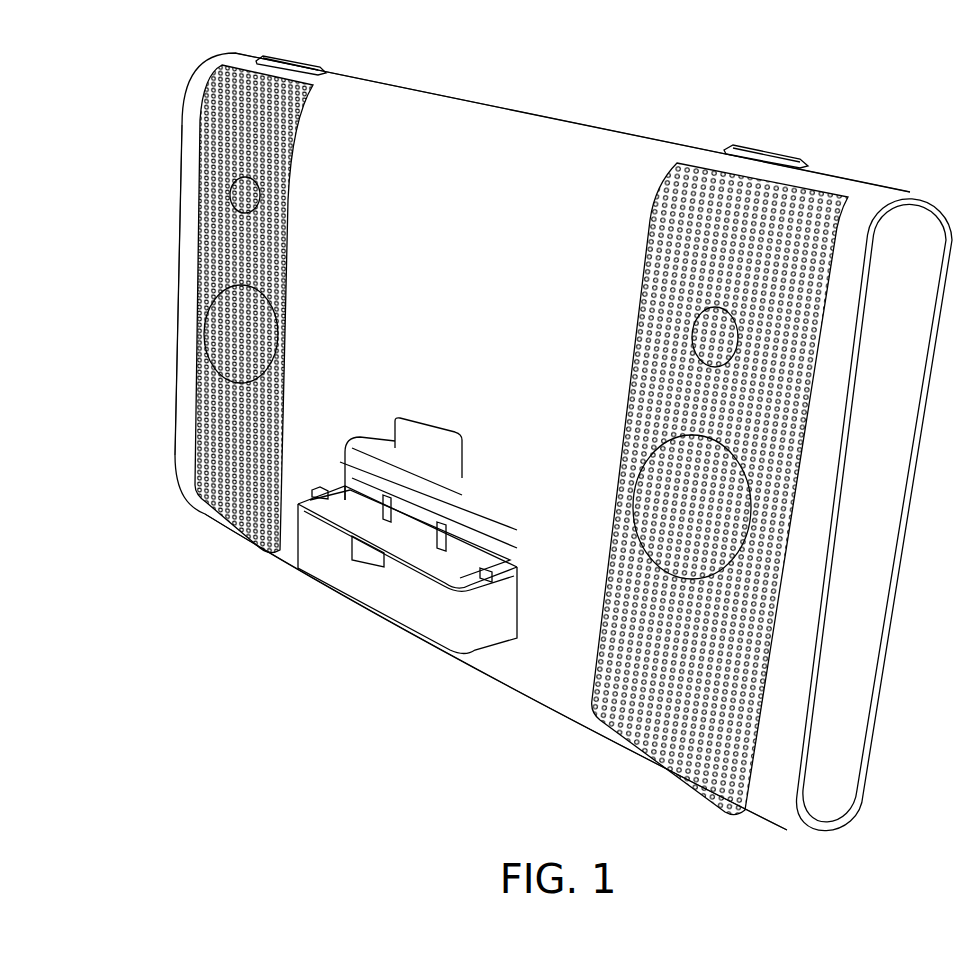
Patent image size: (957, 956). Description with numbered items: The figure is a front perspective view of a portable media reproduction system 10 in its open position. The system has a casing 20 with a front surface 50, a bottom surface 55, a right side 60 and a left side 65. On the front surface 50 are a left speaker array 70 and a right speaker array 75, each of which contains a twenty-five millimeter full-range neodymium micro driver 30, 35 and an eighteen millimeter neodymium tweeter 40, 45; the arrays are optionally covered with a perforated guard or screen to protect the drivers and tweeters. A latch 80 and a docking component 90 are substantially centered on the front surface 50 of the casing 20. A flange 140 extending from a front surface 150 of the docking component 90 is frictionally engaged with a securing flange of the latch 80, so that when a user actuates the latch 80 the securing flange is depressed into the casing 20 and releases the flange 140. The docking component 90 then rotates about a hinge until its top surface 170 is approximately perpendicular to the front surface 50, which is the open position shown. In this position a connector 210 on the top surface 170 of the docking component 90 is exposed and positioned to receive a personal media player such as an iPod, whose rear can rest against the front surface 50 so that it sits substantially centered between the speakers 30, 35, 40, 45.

The portable media reproduction system 10 is at (843, 89).
The casing 20 is at (517, 140).
The full-range neodymium micro driver 30 is at (226, 351).
The full-range neodymium micro driver 35 is at (712, 508).
The neodymium tweeter 40 is at (238, 197).
The neodymium tweeter 45 is at (722, 337).
The front surface 50 is at (448, 274).
The bottom surface 55 is at (566, 713).
The right side 60 is at (835, 751).
The left side 65 is at (172, 406).
The left speaker array 70 is at (234, 97).
The right speaker array 75 is at (780, 303).
The latch 80 is at (435, 440).
The docking component 90 is at (406, 527).
The flange 140 is at (360, 545).
The front surface of docking component 150 is at (389, 603).
The top surface of docking component 170 is at (460, 556).
The connector 210 is at (358, 514).